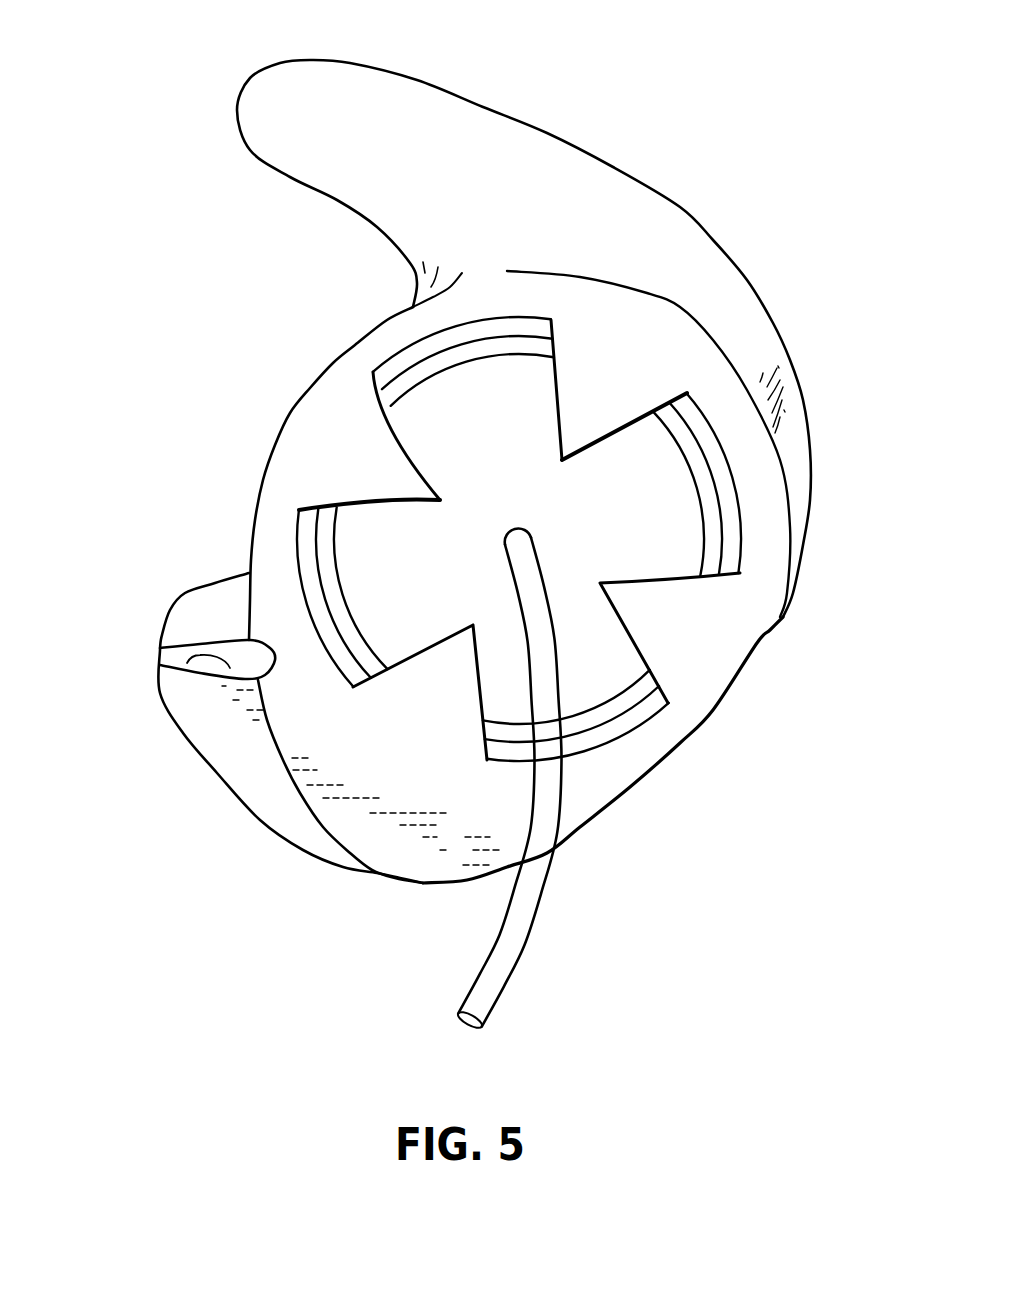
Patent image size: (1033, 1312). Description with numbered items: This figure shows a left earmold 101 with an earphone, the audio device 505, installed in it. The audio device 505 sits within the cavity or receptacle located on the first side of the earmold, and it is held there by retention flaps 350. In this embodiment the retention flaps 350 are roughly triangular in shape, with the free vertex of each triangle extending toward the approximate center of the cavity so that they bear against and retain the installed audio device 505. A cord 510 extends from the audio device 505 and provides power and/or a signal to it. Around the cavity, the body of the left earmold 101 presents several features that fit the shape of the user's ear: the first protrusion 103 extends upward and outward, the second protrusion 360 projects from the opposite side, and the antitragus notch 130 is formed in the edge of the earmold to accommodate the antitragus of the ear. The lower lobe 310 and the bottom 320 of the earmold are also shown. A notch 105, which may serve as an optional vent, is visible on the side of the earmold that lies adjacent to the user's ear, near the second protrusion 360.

The left earmold 101 is at (282, 300).
The first protrusion 103 is at (280, 88).
The notch 105 is at (187, 663).
The antitragus notch 130 is at (677, 747).
The lower lobe 310 is at (385, 877).
The bottom 320 is at (787, 600).
The retention flaps 350 is at (590, 404).
The second protrusion 360 is at (182, 618).
The audio device 505 is at (660, 483).
The cord 510 is at (520, 920).